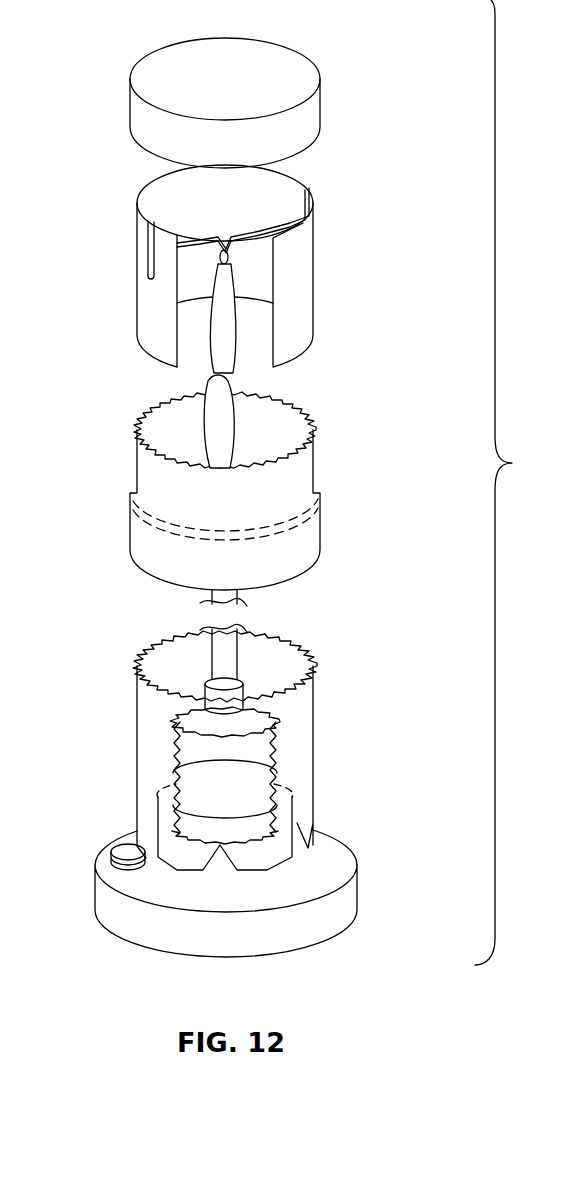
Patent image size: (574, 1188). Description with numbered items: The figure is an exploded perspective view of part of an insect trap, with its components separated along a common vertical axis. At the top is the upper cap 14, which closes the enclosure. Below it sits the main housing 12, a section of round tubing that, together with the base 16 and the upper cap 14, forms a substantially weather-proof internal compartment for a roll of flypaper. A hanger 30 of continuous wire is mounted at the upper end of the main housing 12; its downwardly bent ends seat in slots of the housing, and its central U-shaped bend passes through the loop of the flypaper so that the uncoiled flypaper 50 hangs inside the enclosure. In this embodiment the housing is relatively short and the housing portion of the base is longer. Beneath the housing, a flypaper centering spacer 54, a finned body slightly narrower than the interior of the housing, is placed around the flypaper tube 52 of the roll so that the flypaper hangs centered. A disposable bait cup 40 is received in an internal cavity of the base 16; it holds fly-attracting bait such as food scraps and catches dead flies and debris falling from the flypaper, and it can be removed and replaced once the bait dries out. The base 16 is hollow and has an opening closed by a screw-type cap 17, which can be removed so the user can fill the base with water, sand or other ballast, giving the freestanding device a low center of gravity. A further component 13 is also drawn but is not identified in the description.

The upper cap 14 is at (312, 62).
The hanger 30 is at (291, 212).
The main housing 12 is at (300, 310).
The flypaper 50 is at (225, 349).
The flypaper centering spacer 54 is at (183, 693).
The flypaper tube 52 is at (240, 698).
The bait cup 40 is at (298, 817).
The serrated insert 13 is at (237, 860).
The base 16 is at (325, 853).
The screw-type cap 17 is at (127, 849).